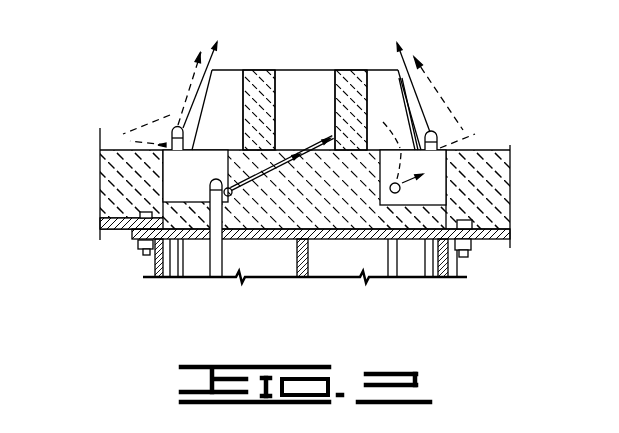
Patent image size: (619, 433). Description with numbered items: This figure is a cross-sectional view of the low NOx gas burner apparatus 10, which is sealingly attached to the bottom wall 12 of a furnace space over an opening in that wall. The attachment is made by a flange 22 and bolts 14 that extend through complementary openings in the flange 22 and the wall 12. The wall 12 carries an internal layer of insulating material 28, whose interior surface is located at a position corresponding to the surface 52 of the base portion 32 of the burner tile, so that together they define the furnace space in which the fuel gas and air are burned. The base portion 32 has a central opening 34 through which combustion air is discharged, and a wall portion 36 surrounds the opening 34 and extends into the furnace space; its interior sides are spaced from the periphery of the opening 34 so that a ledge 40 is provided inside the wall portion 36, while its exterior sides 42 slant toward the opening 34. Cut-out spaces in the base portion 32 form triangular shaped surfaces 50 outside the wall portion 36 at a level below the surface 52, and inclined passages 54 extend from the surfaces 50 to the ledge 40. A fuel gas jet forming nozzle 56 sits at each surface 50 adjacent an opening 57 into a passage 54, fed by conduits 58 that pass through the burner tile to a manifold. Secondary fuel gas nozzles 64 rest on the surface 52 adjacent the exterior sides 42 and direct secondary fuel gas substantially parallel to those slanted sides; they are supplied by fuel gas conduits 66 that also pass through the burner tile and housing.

The low NOx gas burner apparatus 10 is at (456, 37).
The bottom wall 12 is at (500, 243).
The bolts 14 is at (470, 221).
The flange 22 is at (454, 255).
The insulating material 28 is at (127, 163).
The base portion 32 is at (508, 199).
The central opening 34 is at (333, 208).
The wall portion 36 is at (378, 69).
The ledge 40 is at (285, 149).
The exterior sides 42 is at (405, 92).
The triangular shaped surfaces 50 is at (183, 200).
The surface 52 is at (455, 133).
The passages 54 is at (233, 149).
The fuel gas jet forming nozzle 56 is at (222, 177).
The opening 57 is at (233, 193).
The conduits 58 is at (214, 281).
The secondary fuel gas nozzles 64 is at (172, 128).
The fuel gas conduits 66 is at (172, 279).